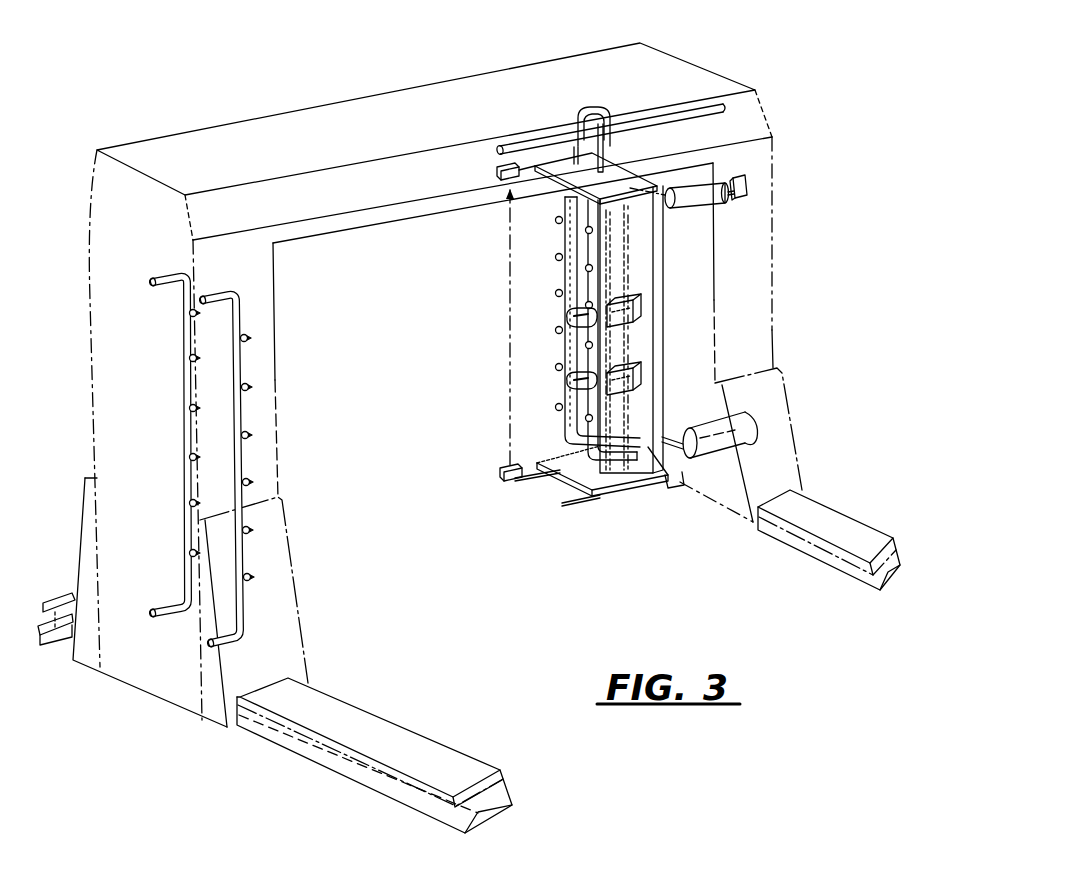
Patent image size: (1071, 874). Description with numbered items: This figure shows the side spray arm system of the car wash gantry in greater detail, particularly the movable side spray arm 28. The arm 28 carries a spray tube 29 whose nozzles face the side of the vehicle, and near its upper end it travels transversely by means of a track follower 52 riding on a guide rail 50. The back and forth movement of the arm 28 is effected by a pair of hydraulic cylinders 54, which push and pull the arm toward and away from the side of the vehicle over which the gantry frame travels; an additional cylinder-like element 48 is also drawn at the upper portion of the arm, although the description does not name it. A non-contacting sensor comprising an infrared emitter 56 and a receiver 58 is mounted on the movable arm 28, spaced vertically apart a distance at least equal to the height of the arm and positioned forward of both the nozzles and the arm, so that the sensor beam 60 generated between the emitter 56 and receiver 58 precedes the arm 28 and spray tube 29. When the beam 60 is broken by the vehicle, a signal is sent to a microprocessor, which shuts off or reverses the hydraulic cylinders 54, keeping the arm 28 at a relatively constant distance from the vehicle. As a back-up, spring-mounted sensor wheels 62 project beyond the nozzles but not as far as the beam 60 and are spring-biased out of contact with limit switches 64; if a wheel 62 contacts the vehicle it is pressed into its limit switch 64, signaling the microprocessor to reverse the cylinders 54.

The movable side spray arm 28 is at (641, 288).
The spray tube 29 is at (562, 243).
The upper cylinder actuator 48 is at (708, 200).
The guide rail 50 is at (702, 108).
The track follower 52 is at (592, 108).
The hydraulic cylinders 54 is at (756, 443).
The infrared emitter 56 is at (502, 481).
The receiver 58 is at (484, 171).
The sensor beam 60 is at (507, 395).
The sensor wheels 62 is at (560, 315).
The limit switches 64 is at (644, 328).